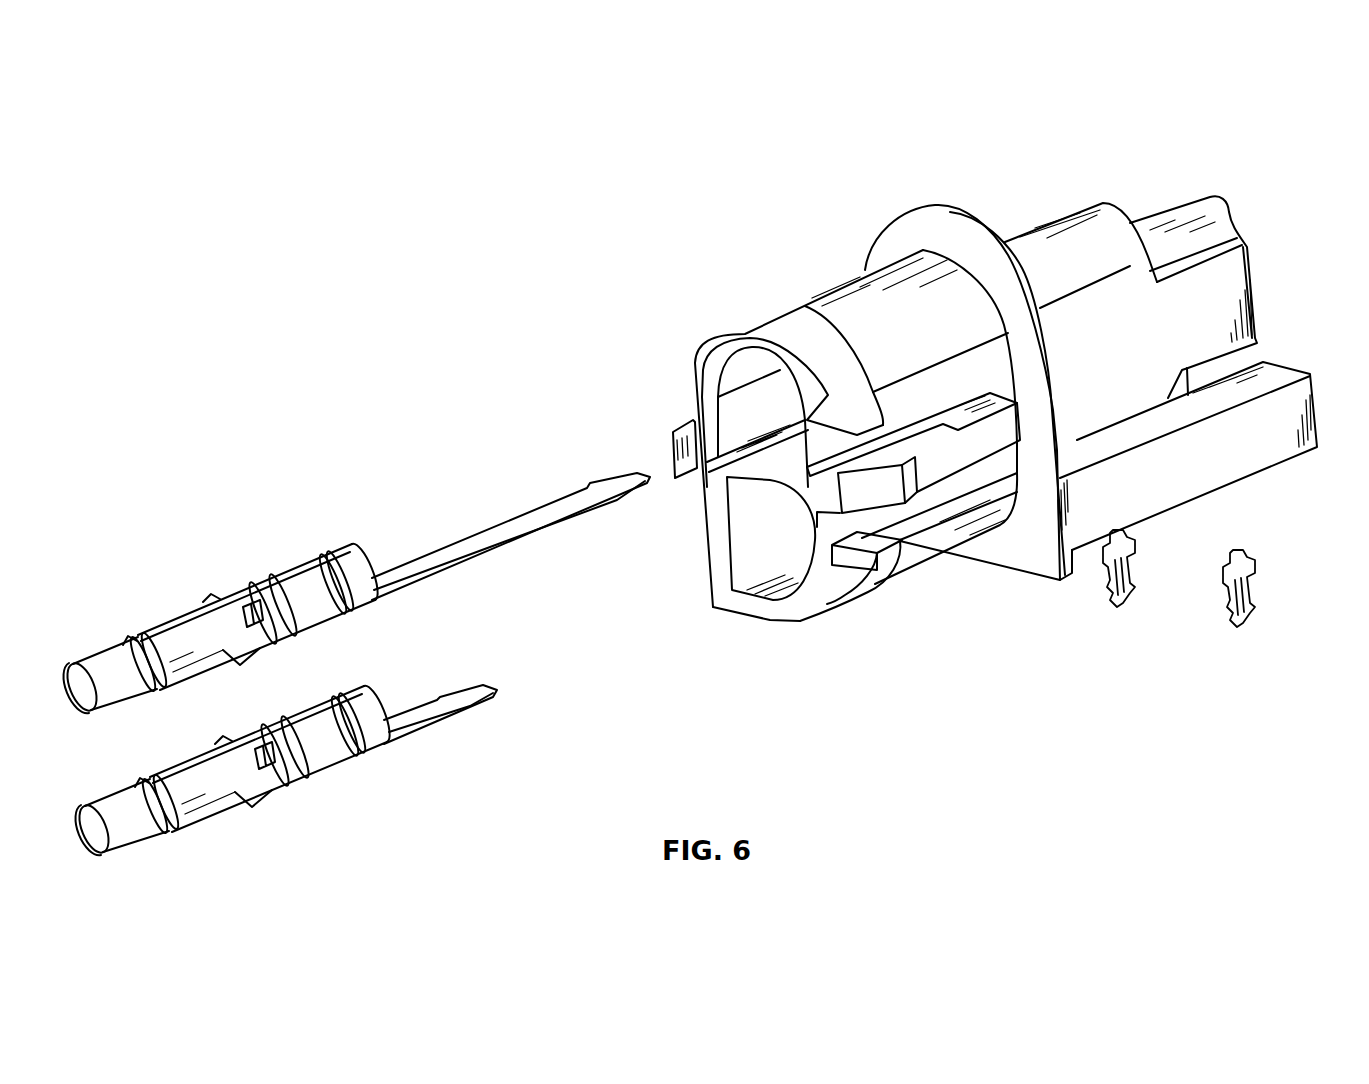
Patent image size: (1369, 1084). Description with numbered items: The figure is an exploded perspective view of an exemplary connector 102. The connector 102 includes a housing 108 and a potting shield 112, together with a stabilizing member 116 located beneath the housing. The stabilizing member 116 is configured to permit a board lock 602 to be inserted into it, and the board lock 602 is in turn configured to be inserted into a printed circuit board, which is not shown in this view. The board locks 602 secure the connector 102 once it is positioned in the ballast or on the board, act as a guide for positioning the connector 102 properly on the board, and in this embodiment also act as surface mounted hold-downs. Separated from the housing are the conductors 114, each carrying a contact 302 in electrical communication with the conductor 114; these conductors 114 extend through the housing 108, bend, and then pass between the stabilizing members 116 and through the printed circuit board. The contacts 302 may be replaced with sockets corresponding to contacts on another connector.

The connector 102 is at (246, 356).
The housing 108 is at (813, 320).
The potting shield 112 is at (950, 203).
The conductor 114 is at (540, 517).
The stabilizing member 116 is at (1277, 447).
The contact 302 is at (98, 670).
The board lock 602 is at (1137, 597).